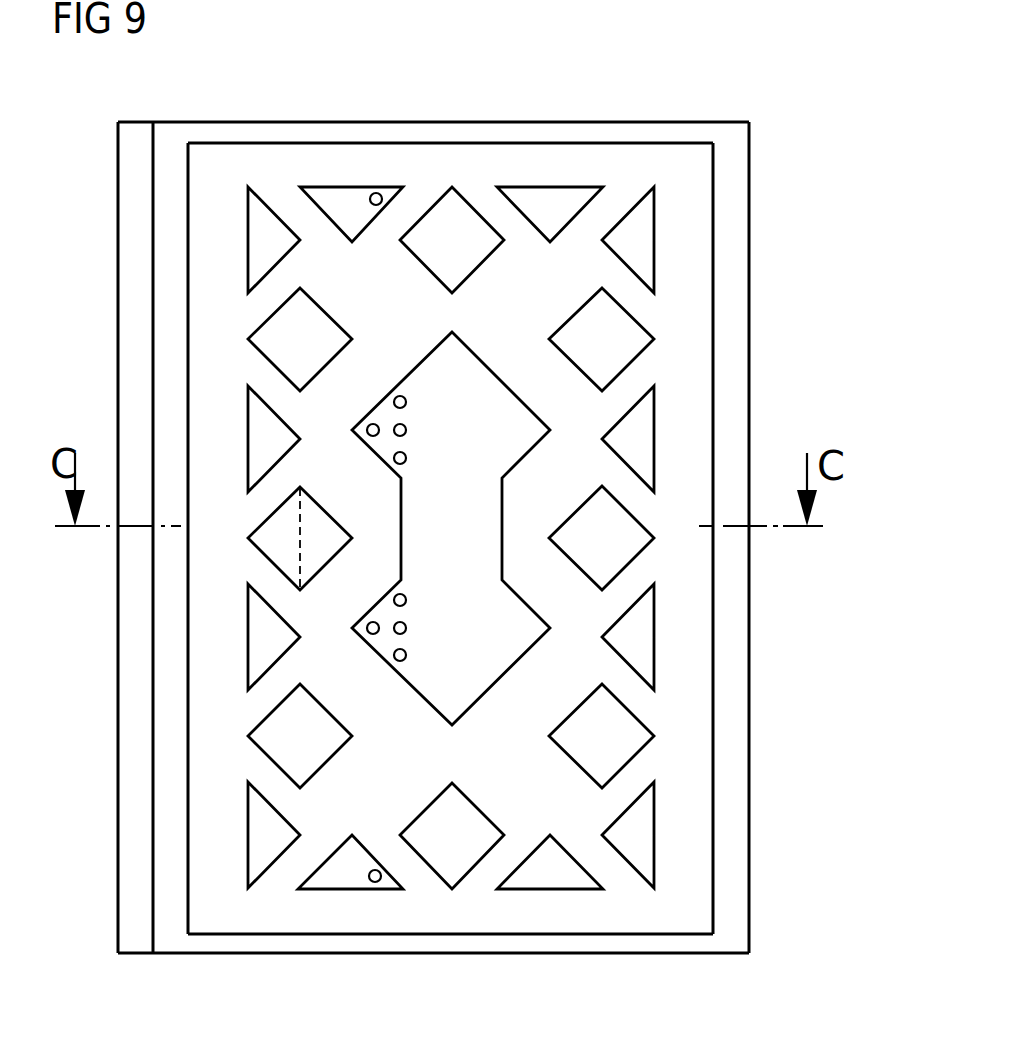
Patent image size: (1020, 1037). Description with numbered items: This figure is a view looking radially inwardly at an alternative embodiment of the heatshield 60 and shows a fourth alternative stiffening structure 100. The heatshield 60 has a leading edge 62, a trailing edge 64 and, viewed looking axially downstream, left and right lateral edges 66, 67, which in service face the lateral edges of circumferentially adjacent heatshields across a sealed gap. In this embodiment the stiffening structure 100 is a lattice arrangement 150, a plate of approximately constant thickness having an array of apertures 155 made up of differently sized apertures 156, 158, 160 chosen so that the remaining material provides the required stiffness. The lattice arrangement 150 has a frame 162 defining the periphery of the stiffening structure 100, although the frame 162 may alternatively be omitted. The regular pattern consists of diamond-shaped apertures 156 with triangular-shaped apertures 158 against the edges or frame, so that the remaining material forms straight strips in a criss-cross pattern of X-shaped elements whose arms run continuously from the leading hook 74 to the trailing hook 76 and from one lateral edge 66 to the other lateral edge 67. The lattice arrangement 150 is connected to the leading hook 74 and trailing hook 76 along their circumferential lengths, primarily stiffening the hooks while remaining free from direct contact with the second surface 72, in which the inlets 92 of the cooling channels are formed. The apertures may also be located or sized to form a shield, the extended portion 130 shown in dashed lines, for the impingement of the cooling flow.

The heatshield 60 is at (780, 103).
The leading edge 62 is at (118, 645).
The trailing edge 64 is at (750, 593).
The left lateral edge 66 is at (450, 122).
The right lateral edge 67 is at (451, 953).
The second surface 72 is at (466, 550).
The leading hook 74 is at (132, 758).
The trailing hook 76 is at (740, 757).
The inlet 92 is at (405, 430).
The stiffening structure 100 is at (790, 315).
The extended portion 130 is at (316, 520).
The lattice arrangement 150 is at (685, 440).
The array of apertures 155 is at (657, 707).
The diamond-shaped aperture 156 is at (580, 518).
The triangular-shaped aperture 158 is at (625, 628).
The aperture 160 is at (477, 683).
The frame 162 is at (205, 802).